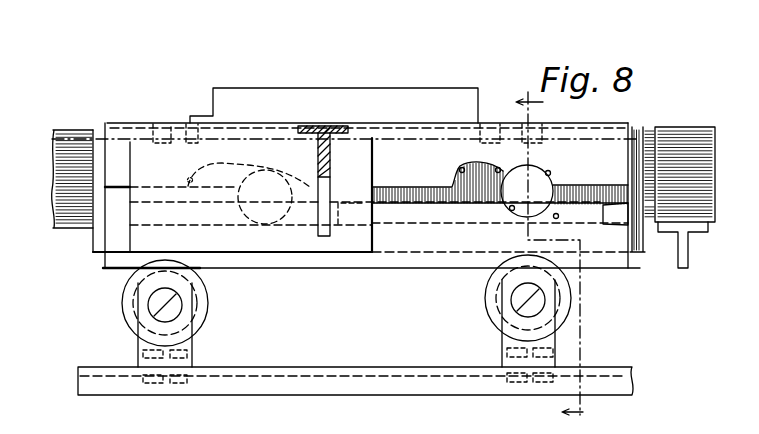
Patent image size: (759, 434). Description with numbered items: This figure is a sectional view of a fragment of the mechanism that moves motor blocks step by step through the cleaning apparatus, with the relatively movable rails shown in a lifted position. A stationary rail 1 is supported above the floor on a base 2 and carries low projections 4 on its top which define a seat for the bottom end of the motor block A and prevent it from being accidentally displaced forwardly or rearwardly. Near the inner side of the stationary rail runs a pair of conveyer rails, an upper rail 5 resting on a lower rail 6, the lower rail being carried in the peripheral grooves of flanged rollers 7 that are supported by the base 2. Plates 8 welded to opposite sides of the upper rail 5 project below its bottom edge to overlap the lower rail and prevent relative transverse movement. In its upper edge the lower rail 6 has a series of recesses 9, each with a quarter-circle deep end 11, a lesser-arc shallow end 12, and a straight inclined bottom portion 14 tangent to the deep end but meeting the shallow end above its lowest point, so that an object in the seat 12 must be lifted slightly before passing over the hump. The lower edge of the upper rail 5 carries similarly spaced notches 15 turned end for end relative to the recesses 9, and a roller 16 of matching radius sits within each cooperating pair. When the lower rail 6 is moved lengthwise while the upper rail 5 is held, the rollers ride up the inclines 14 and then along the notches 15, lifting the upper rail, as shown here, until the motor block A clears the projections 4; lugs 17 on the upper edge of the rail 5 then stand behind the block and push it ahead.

The stationary rail 1 is at (67, 131).
The base 2 is at (358, 366).
The projection 4 is at (150, 125).
The upper rail 5 is at (108, 123).
The lower rail 6 is at (103, 263).
The flanged roller 7 is at (208, 308).
The plate 8 is at (279, 258).
The recess 9 is at (561, 258).
The deep end 11 is at (193, 178).
The shallow end 12 is at (556, 165).
The straight bottom portion 14 is at (235, 160).
The notch 15 is at (203, 170).
The roller 16 is at (268, 172).
The lug 17 is at (200, 117).
The motor block A is at (326, 93).